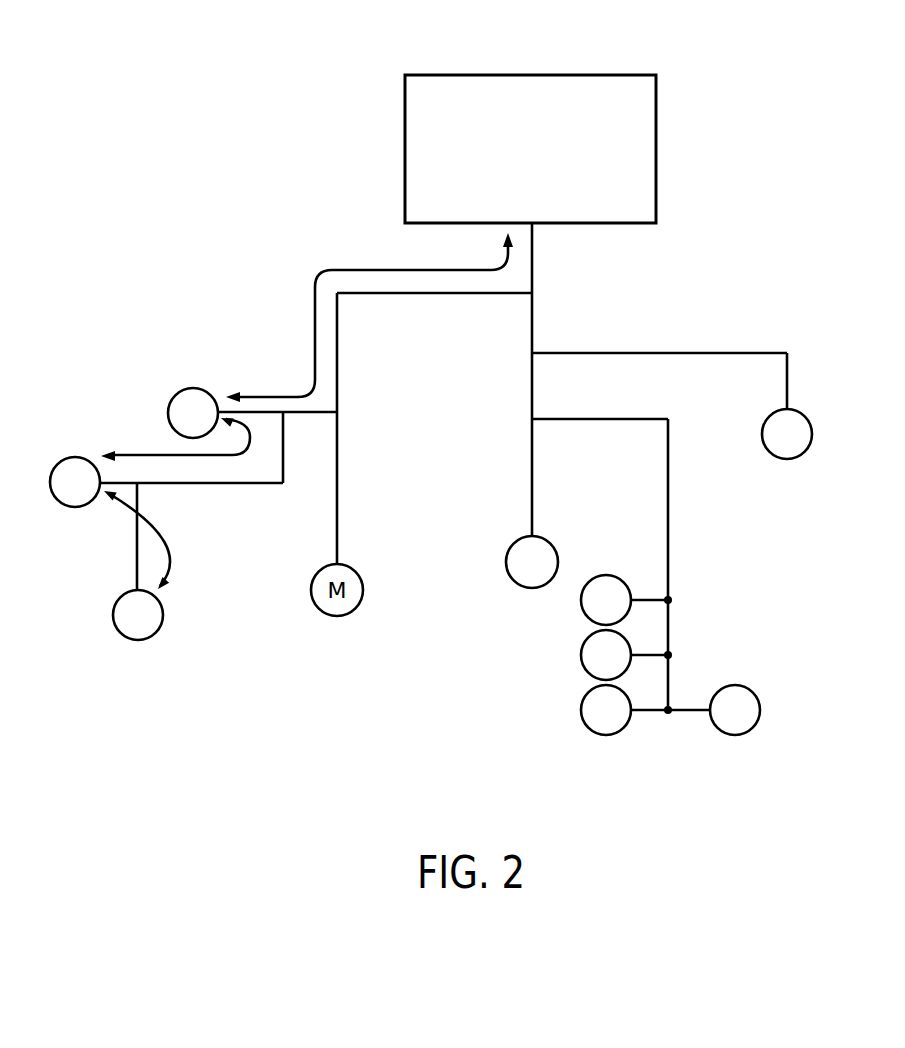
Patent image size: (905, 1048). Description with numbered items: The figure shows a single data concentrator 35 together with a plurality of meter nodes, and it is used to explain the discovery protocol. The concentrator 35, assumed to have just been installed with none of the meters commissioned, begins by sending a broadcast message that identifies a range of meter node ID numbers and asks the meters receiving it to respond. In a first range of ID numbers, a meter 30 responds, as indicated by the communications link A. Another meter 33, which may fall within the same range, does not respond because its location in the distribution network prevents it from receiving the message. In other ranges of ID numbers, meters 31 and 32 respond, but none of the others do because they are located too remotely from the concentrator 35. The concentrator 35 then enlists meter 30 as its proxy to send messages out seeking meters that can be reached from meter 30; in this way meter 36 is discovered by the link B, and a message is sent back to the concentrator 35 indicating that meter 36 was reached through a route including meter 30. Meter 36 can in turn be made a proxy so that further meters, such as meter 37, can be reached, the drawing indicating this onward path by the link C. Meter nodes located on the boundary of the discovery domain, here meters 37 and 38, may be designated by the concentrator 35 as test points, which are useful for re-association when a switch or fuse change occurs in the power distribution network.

The data concentrator 35 is at (610, 75).
The meter 30 is at (190, 388).
The meter 31 is at (812, 424).
The meter 32 is at (540, 536).
The meter 33 is at (582, 660).
The meter 36 is at (67, 507).
The meter 37 is at (128, 642).
The meter 38 is at (755, 694).
The communications link A is at (260, 396).
The link B is at (130, 454).
The communication path C is at (162, 558).